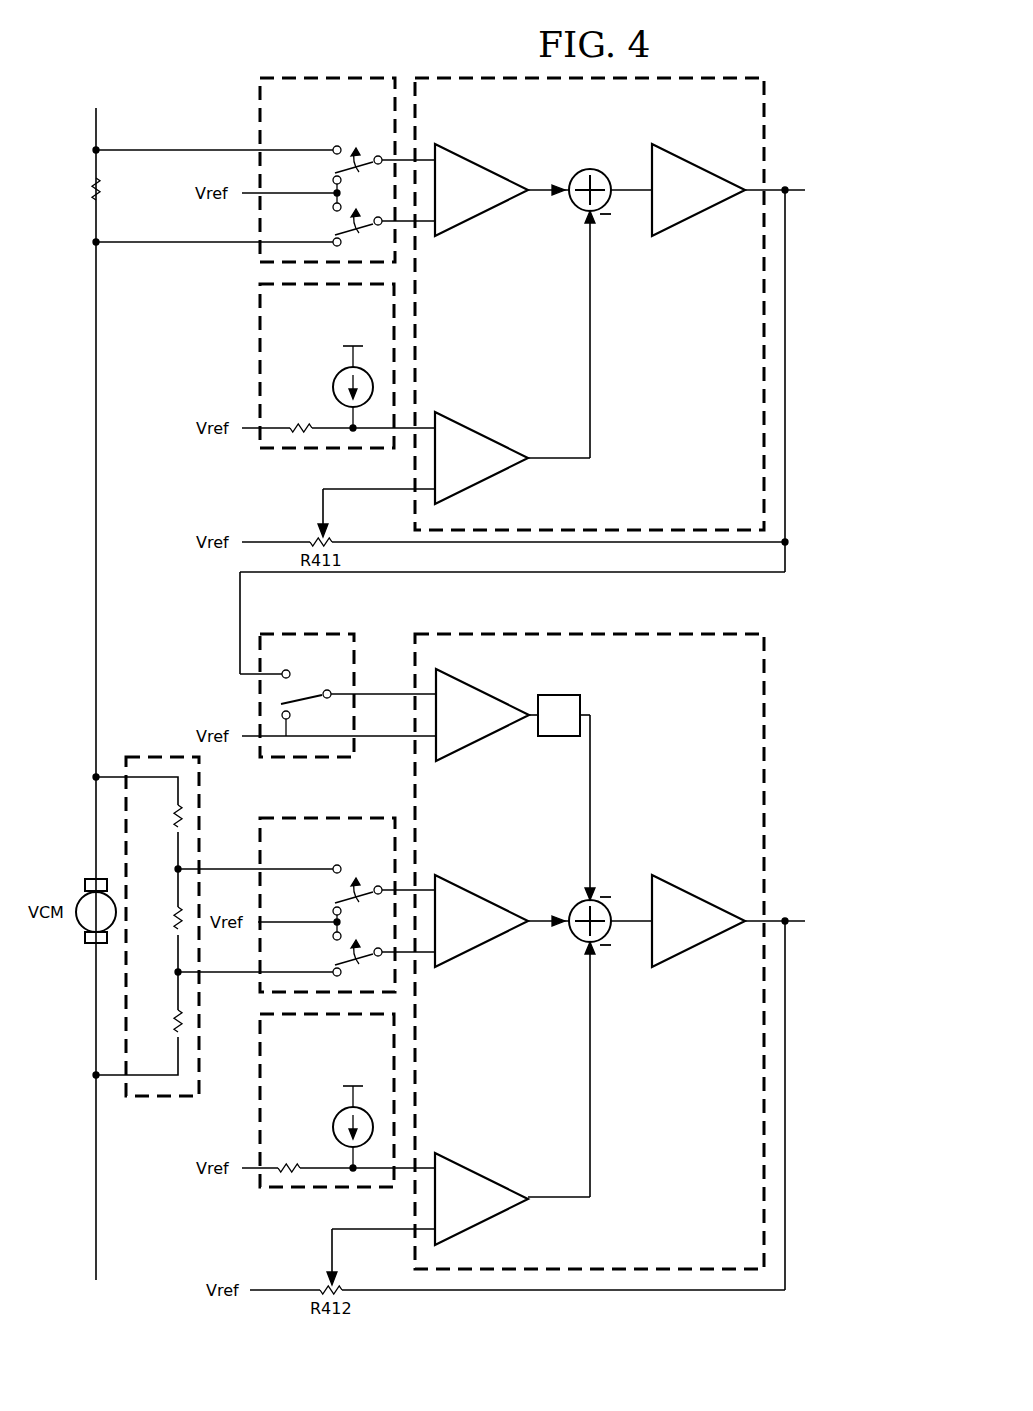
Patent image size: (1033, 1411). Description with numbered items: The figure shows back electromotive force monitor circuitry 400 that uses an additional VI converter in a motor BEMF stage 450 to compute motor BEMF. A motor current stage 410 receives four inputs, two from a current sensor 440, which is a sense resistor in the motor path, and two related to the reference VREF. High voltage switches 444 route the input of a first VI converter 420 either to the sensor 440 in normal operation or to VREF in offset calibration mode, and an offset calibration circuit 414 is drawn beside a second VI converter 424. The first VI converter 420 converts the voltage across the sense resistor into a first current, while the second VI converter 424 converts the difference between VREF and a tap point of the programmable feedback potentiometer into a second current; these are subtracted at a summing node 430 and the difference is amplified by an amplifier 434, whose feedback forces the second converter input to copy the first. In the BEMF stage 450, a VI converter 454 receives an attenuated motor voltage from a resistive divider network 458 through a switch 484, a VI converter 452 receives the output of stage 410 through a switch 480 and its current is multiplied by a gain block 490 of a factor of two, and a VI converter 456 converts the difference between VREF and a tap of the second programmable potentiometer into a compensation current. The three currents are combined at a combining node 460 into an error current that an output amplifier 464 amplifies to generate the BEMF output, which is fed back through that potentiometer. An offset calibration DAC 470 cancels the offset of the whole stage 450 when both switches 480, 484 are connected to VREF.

The back electromotive force monitor circuitry 400 is at (165, 56).
The motor current stage 410 is at (716, 76).
The offset calibration circuit 414 is at (255, 313).
The first VI converter 420 is at (481, 213).
The second VI converter 424 is at (481, 481).
The summing node 430 is at (604, 172).
The amplifier 434 is at (699, 213).
The current sensor 440 is at (104, 189).
The high voltage switches 444 is at (255, 107).
The motor BEMF stage 450 is at (716, 632).
The VI converter 452 is at (481, 738).
The VI converter 454 is at (481, 944).
The VI converter 456 is at (481, 1222).
The resistive divider network 458 is at (153, 753).
The combining node 460 is at (578, 939).
The output amplifier 464 is at (699, 944).
The offset calibration DAC 470 is at (284, 1196).
The switch 480 is at (287, 632).
The switch 484 is at (285, 816).
The X2 gain block 490 is at (558, 694).